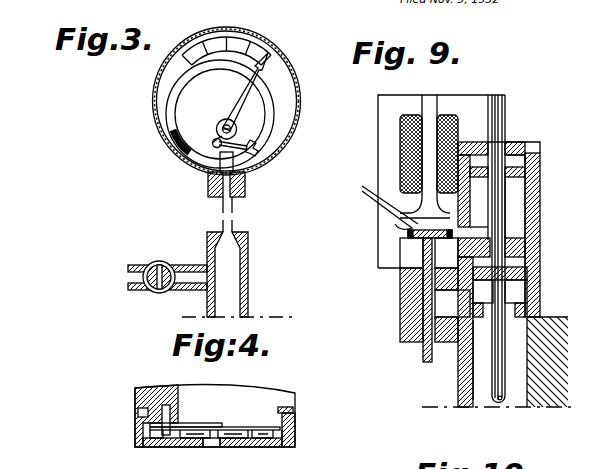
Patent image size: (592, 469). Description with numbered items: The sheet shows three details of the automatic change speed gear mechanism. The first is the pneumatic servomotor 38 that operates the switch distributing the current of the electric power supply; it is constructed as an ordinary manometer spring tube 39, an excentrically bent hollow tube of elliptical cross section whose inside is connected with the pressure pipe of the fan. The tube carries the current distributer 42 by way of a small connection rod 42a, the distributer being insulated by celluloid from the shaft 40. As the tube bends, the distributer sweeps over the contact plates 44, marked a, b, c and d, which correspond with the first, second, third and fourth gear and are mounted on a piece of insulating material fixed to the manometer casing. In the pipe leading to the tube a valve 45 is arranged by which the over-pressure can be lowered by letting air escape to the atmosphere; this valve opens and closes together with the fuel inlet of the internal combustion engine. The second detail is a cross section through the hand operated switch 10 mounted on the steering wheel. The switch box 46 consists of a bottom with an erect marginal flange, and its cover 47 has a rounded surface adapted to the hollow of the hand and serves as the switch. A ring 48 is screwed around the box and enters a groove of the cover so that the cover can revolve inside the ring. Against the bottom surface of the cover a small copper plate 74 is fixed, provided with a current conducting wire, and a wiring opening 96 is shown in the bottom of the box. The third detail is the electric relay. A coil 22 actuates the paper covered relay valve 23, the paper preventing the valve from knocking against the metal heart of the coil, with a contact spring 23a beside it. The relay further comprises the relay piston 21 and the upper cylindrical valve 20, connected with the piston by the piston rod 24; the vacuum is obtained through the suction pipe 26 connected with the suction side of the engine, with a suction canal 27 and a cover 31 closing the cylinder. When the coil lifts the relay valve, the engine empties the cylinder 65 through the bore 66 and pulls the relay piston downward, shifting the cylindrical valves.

In FIG. 3, the pneumatic servomotor 38 is at (163, 81).
In FIG. 3, the manometer spring tube 39 is at (176, 147).
In FIG. 3, the shaft 40 is at (222, 128).
In FIG. 3, the current distributer 42 is at (241, 100).
In FIG. 3, the connection rod 42a is at (217, 149).
In FIG. 3, the contact plates 44 is at (206, 29).
In FIG. 3, the valve 45 is at (150, 290).
In FIG. 4, the casing 10 is at (160, 396).
In FIG. 4, the switch box 46 is at (185, 447).
In FIG. 4, the cover 47 is at (227, 401).
In FIG. 4, the ring 48 is at (138, 433).
In FIG. 4, the copper plate 74 is at (215, 422).
In FIG. 4, the opening 96 is at (215, 450).
In FIG. 9, the upper cylindrical valve 20 is at (528, 318).
In FIG. 9, the relay piston 21 is at (532, 184).
In FIG. 9, the coil 22 is at (428, 112).
In FIG. 9, the relay valve 23 is at (408, 233).
In FIG. 9, the contact spring 23a is at (385, 200).
In FIG. 9, the piston rod 24 is at (498, 127).
In FIG. 9, the suction pipe 26 is at (452, 303).
In FIG. 9, the suction canal 27 is at (530, 304).
In FIG. 9, the cover 31 is at (547, 362).
In FIG. 9, the cylinder 65 is at (532, 224).
In FIG. 9, the bore 66 is at (500, 360).